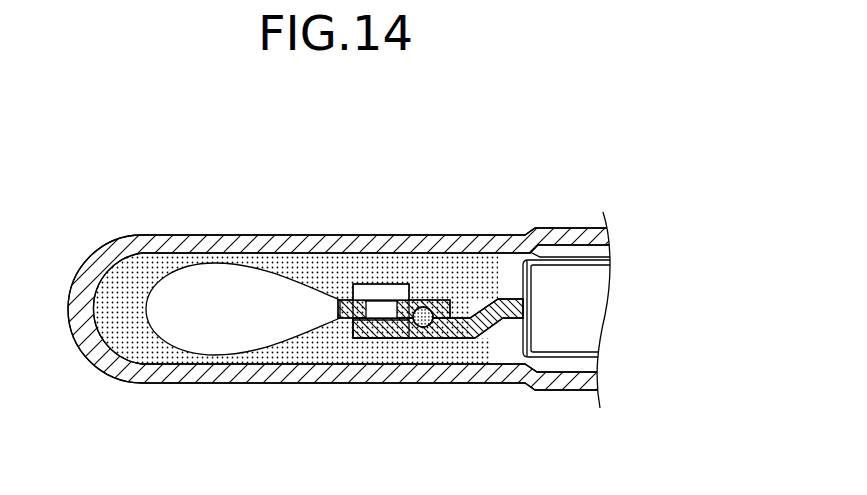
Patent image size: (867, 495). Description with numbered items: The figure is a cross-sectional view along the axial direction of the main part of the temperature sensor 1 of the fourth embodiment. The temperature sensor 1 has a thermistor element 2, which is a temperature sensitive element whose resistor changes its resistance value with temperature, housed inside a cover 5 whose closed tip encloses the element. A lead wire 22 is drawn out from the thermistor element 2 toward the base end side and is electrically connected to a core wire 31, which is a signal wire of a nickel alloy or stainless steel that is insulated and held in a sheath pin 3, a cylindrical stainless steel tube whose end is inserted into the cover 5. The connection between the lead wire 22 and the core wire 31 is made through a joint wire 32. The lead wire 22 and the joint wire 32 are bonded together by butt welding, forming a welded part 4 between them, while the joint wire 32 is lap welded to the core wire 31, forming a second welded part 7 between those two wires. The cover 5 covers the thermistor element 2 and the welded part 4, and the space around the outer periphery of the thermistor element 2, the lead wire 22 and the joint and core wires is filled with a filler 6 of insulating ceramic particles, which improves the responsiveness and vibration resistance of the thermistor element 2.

The temperature sensor 1 is at (569, 143).
The thermistor element 2 is at (318, 283).
The sheath pin 3 is at (577, 298).
The welded part 4 is at (383, 308).
The cover 5 is at (238, 372).
The filler 6 is at (122, 343).
The welded part 7 is at (423, 328).
The lead wire 22 is at (353, 322).
The core wire 31 is at (475, 333).
The joint wire 32 is at (440, 300).